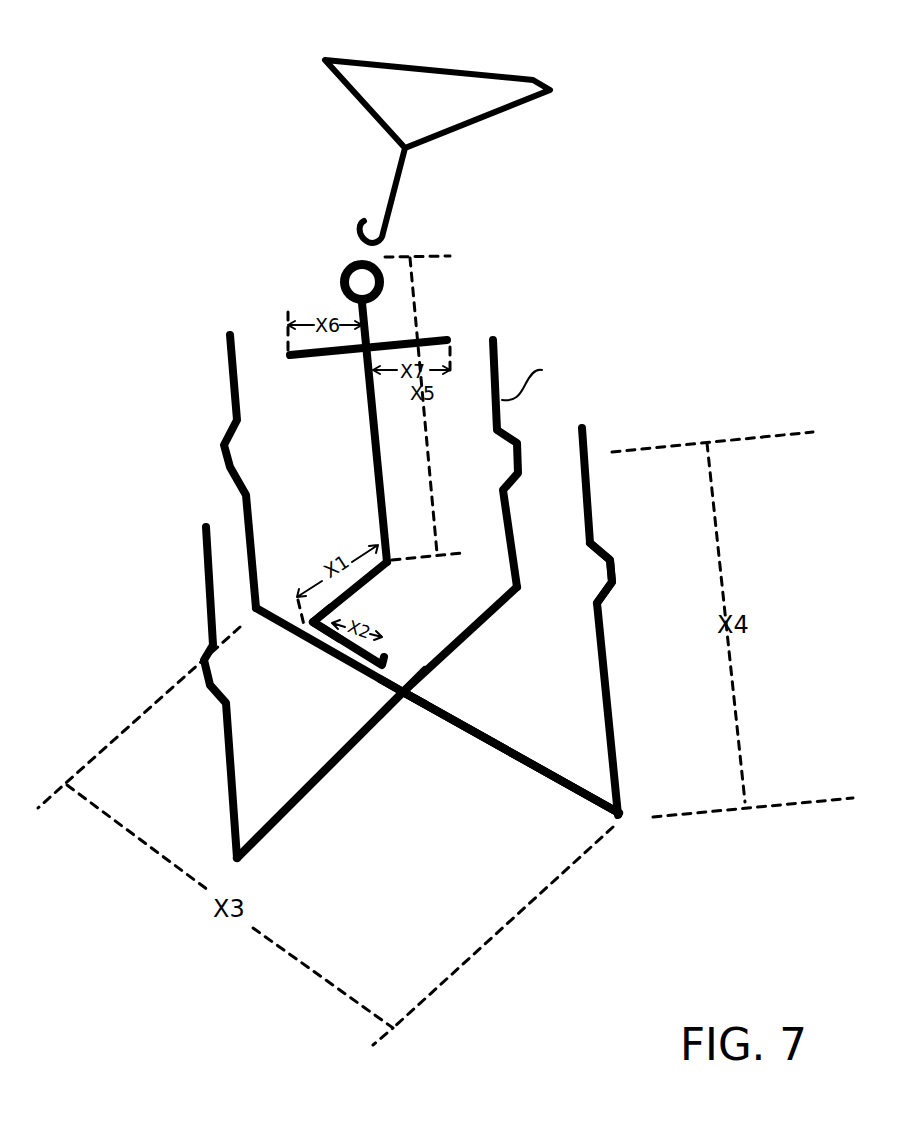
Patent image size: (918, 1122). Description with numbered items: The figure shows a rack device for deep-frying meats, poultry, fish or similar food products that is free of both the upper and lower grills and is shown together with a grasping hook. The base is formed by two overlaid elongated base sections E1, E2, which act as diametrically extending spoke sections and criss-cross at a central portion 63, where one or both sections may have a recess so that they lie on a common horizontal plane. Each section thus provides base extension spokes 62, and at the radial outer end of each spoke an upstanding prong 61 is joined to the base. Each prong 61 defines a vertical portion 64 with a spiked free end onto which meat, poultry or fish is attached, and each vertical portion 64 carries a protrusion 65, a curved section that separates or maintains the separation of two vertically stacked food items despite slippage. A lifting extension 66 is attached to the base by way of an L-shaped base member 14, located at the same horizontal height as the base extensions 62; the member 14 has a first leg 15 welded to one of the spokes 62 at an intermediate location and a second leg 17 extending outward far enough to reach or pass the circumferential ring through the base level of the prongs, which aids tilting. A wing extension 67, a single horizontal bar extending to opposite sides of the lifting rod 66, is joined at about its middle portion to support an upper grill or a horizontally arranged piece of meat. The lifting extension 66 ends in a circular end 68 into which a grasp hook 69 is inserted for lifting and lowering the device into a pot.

The L-shaped base member 14 is at (320, 607).
The first leg 15 is at (377, 640).
The diagonal foot segment 17 is at (367, 602).
The prong 61 is at (627, 783).
The base extension spoke 62 is at (492, 733).
The central portion 63 is at (403, 700).
The vertical portion 64 is at (613, 682).
The protrusion 65 is at (613, 563).
The lifting extension 66 is at (373, 437).
The wing extension 67 is at (397, 340).
The circular end 68 is at (340, 272).
The grasp hook 69 is at (533, 80).
The elongated base section E1 is at (310, 790).
The elongated base section E2 is at (512, 760).